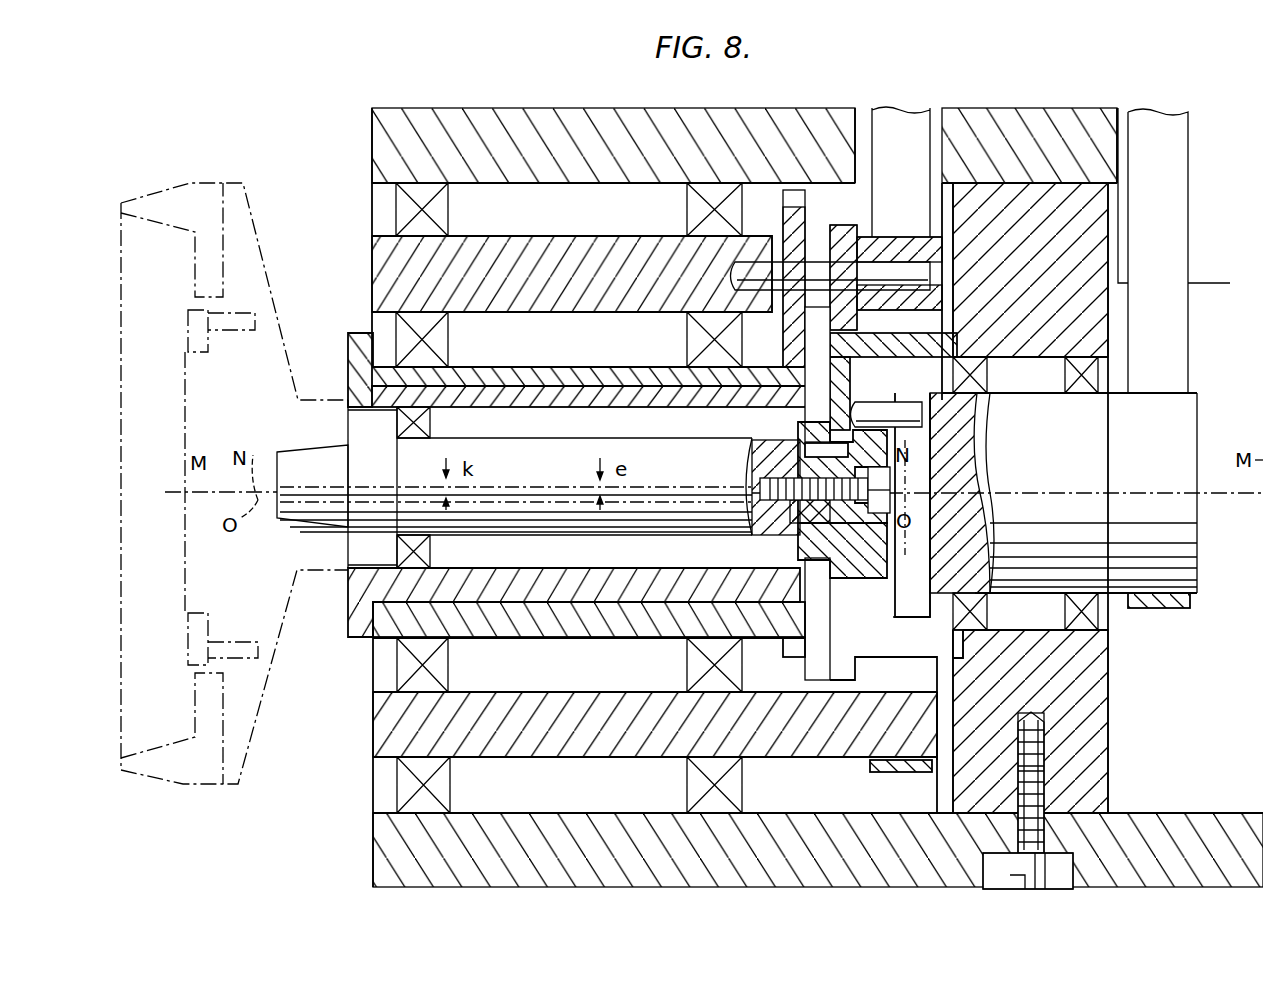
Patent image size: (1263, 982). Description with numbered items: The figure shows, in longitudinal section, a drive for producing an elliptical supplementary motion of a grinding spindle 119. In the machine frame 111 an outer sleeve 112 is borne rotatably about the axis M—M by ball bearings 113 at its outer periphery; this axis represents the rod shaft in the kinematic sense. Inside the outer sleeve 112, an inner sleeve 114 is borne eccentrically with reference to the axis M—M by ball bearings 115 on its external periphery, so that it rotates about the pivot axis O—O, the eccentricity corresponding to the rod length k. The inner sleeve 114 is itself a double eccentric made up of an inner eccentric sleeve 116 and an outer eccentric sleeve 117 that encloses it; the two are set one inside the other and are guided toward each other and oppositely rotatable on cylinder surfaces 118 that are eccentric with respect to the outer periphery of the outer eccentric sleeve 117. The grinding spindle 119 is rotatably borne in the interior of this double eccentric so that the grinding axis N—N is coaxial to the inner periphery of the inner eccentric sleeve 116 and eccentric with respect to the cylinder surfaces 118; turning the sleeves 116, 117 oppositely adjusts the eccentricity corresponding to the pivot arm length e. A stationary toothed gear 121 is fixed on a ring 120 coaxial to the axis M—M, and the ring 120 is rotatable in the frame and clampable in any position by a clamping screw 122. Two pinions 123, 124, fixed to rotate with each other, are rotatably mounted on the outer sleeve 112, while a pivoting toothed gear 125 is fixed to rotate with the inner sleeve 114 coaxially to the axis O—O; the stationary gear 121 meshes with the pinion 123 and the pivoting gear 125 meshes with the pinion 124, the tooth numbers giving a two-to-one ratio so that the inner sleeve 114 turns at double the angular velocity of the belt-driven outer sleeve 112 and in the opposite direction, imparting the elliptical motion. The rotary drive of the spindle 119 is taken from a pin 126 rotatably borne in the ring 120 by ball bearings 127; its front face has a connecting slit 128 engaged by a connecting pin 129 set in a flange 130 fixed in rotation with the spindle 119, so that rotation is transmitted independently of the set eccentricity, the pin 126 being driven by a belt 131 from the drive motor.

The machine frame 111 is at (908, 868).
The outer sleeve 112 is at (385, 258).
The ball bearings 113 is at (398, 210).
The inner sleeve 114 is at (341, 361).
The ball bearings 115 is at (406, 340).
The inner eccentric sleeve 116 is at (357, 582).
The outer eccentric sleeve 117 is at (395, 642).
The cylinder surfaces 118 is at (373, 610).
The grinding spindle 119 is at (410, 455).
The ring 120 is at (1048, 275).
The stationary toothed gear 121 is at (850, 660).
The clamping screw 122 is at (1045, 865).
The pinion 123 is at (840, 233).
The pinion 124 is at (795, 200).
The pivoting toothed gear 125 is at (790, 648).
The pin 126 is at (920, 148).
The ball bearings 127 is at (1093, 378).
The connecting slit 128 is at (900, 602).
The connecting pin 129 is at (915, 412).
The flange 130 is at (895, 560).
The belt 131 is at (1155, 608).